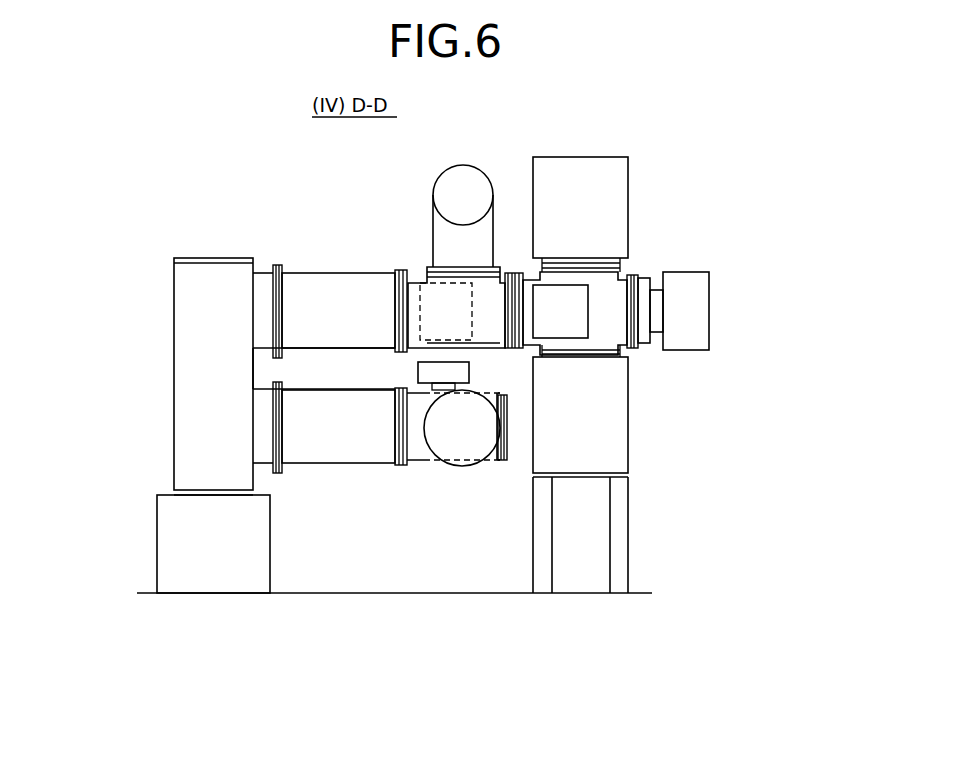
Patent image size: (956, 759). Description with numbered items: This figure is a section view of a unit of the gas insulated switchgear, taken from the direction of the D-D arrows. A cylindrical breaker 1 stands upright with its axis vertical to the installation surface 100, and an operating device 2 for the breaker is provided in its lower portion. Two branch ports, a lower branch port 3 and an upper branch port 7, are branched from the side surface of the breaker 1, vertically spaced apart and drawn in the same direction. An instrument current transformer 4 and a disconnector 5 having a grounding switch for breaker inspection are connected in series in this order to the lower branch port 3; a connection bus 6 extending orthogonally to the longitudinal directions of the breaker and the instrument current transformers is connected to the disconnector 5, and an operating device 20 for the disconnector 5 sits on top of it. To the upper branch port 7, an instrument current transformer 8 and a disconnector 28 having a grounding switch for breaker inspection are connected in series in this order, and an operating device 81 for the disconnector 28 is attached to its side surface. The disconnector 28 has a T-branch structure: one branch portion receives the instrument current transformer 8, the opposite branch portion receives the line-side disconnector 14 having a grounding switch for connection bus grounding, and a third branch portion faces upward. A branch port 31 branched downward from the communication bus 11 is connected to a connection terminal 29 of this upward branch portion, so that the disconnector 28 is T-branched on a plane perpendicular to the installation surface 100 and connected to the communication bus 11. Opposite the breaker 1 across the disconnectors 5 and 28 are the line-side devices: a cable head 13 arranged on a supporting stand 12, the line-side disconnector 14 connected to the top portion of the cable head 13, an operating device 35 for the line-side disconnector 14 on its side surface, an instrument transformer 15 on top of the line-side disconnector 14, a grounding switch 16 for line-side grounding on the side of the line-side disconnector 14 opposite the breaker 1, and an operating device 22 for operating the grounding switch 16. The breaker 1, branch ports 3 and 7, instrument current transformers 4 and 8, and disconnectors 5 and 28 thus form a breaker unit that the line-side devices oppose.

The breaker 1 is at (173, 279).
The operating device 2 is at (270, 545).
The lower branch port 3 is at (263, 400).
The instrument current transformer 4 is at (312, 466).
The disconnector 5 is at (422, 461).
The connection bus 6 is at (495, 462).
The upper branch port 7 is at (264, 272).
The instrument current transformer 8 is at (314, 272).
The communication bus 11 is at (486, 172).
The supporting stand 12 is at (543, 537).
The cable head 13 is at (630, 437).
The line-side disconnector 14 is at (622, 272).
The instrument transformer 15 is at (628, 180).
The grounding switch 16 is at (643, 346).
The operating device 20 is at (423, 372).
The operating device 22 is at (705, 292).
The disconnector 28 is at (412, 277).
The connection terminal 29 is at (477, 259).
The branch port 31 is at (480, 229).
The operating device 35 is at (552, 323).
The operating device 81 is at (422, 283).
The installation surface 100 is at (638, 595).